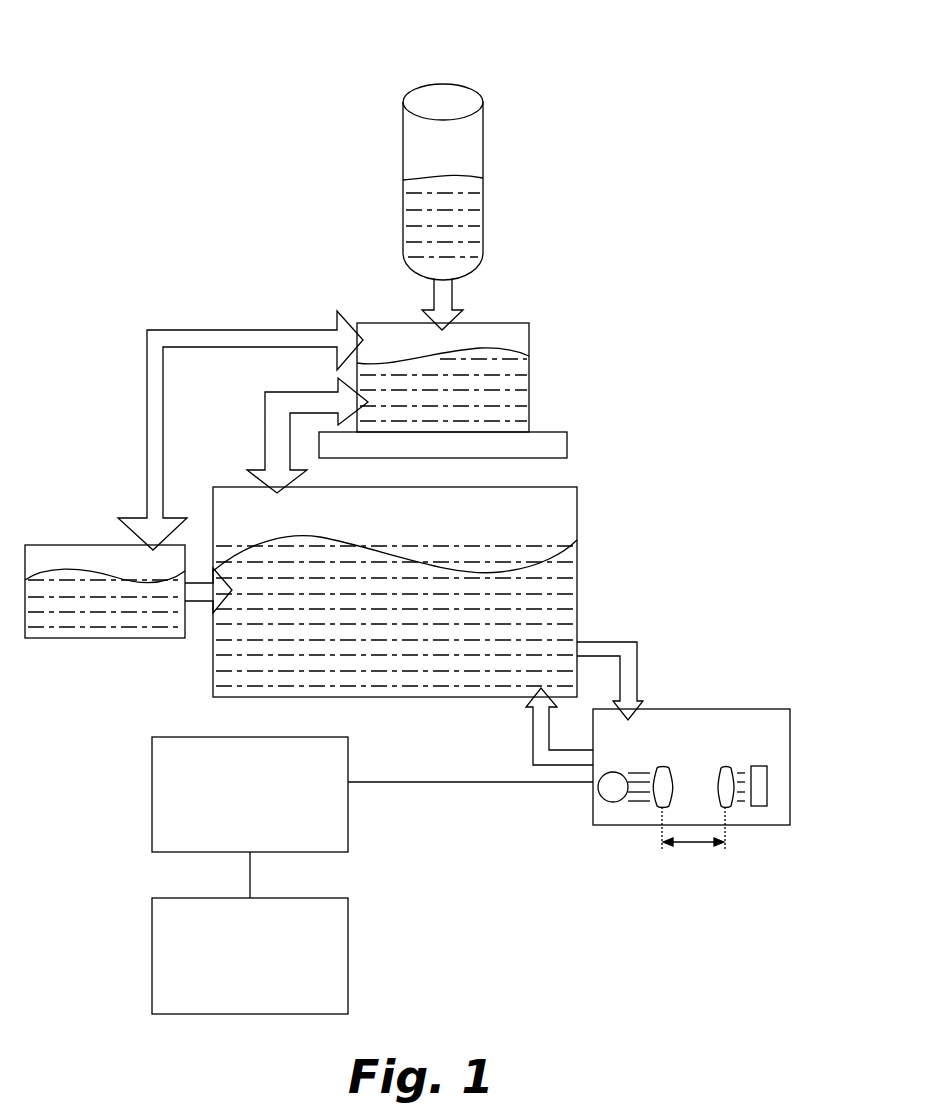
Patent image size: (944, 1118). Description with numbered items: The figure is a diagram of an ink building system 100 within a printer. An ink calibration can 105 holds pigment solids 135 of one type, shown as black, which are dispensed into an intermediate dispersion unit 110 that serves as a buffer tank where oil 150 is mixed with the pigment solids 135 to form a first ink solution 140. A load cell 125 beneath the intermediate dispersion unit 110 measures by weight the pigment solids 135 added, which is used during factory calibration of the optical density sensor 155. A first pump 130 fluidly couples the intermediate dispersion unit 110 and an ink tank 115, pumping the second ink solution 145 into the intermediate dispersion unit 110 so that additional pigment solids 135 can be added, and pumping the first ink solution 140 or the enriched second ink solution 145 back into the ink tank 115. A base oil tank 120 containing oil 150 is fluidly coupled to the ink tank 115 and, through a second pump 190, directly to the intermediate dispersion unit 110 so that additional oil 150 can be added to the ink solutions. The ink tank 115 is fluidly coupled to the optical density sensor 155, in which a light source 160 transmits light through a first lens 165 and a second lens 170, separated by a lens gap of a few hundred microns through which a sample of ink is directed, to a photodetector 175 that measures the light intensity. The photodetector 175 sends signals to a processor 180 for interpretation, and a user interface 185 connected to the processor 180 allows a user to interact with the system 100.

The ink building system 100 is at (178, 107).
The ink calibration can 105 is at (483, 145).
The intermediate dispersion unit 110 is at (529, 333).
The ink tank 115 is at (578, 516).
The base oil tank 120 is at (40, 545).
The load cell 125 is at (545, 448).
The first pump 130 is at (279, 443).
The pigment solids 135 is at (450, 240).
The first ink solution 140 is at (503, 405).
The second ink solution 145 is at (552, 598).
The oil 150 is at (67, 617).
The optical density sensor 155 is at (675, 767).
The light source 160 is at (612, 787).
The first lens 165 is at (660, 799).
The second lens 170 is at (727, 775).
The photodetector 175 is at (760, 786).
The processor 180 is at (250, 794).
The user interface 185 is at (250, 956).
The second pump 190 is at (153, 340).